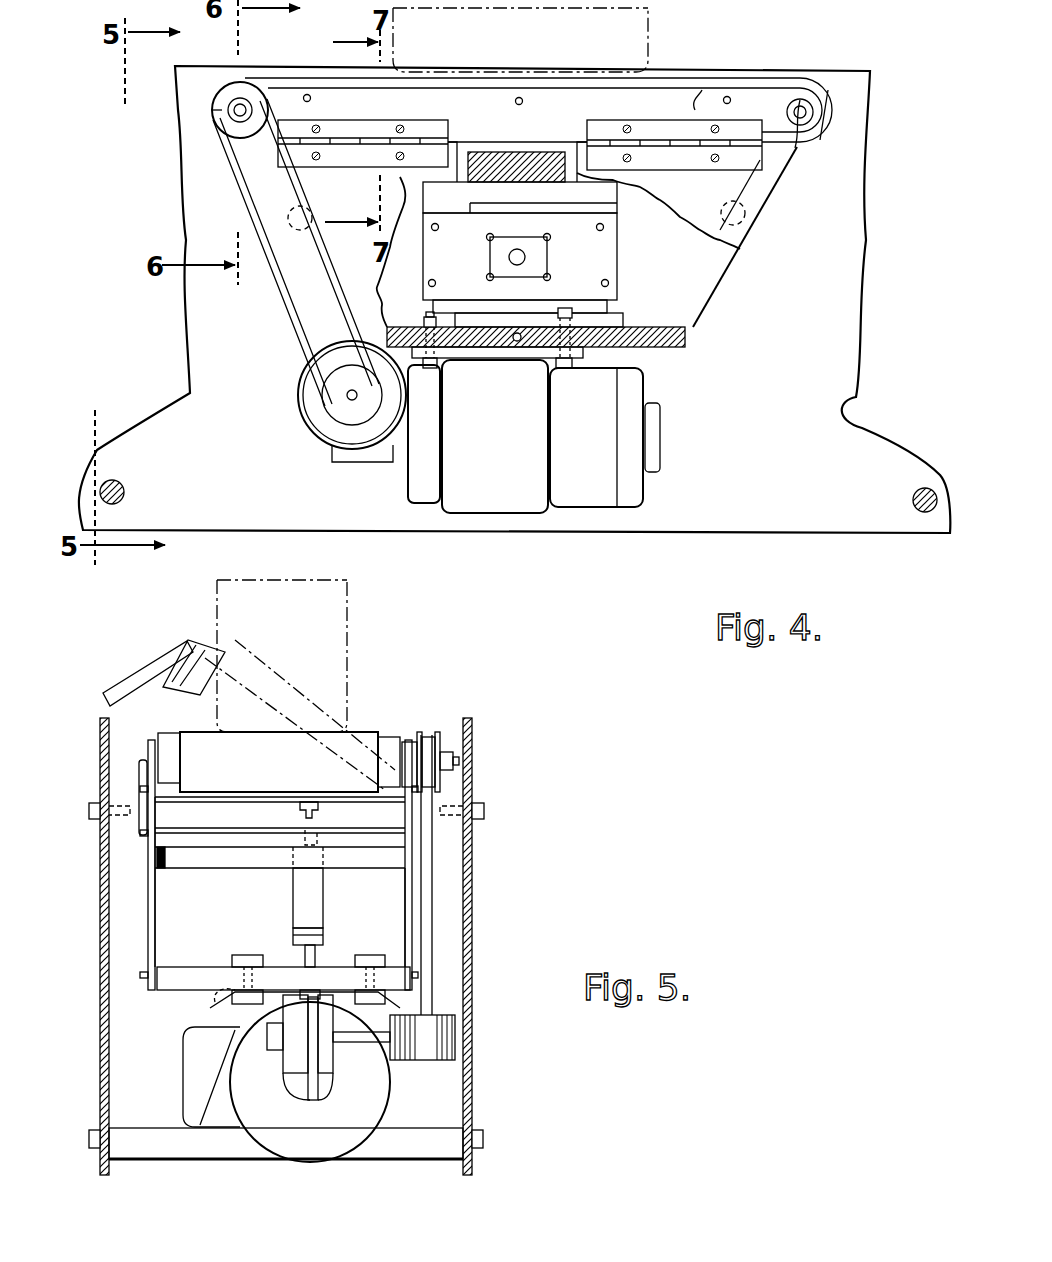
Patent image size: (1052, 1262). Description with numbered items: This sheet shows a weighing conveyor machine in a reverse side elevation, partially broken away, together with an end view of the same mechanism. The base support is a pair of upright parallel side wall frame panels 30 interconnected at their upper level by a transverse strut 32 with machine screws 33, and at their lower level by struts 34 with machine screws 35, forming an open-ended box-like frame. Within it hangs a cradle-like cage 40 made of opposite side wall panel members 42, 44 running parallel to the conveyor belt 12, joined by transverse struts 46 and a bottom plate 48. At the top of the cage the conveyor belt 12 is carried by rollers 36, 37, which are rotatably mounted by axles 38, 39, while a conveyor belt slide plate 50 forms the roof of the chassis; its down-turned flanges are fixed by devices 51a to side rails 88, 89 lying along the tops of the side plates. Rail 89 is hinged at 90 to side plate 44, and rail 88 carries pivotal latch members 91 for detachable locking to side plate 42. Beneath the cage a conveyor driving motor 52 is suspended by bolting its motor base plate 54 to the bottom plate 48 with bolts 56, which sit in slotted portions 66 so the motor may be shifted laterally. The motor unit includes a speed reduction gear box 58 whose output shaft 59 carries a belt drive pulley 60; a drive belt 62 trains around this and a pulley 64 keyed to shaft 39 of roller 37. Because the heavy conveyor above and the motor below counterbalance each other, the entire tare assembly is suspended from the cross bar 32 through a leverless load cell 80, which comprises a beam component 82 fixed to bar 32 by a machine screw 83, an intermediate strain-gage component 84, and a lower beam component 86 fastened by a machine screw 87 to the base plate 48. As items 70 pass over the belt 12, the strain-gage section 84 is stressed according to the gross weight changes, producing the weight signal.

In FIG. 4, the conveyor belt 12 is at (778, 70).
In FIG. 5, the conveyor belt 12 is at (352, 705).
In FIG. 4, the side wall frame panel 30 is at (848, 378).
In FIG. 5, the side wall frame panel 30 is at (472, 862).
In FIG. 4, the transverse strut 32 is at (506, 168).
In FIG. 5, the transverse strut 32 is at (142, 830).
In FIG. 5, the machine screw 33 is at (92, 808).
In FIG. 4, the strut 34 is at (122, 484).
In FIG. 5, the strut 34 is at (136, 1147).
In FIG. 5, the machine screw 35 is at (95, 1134).
In FIG. 4, the roller 36 is at (818, 76).
In FIG. 5, the roller 37 is at (170, 732).
In FIG. 4, the axle 38 is at (806, 113).
In FIG. 4, the axle 39 is at (236, 110).
In FIG. 5, the axle 39 is at (453, 768).
In FIG. 4, the cage 40 is at (722, 300).
In FIG. 5, the cage 40 is at (150, 995).
In FIG. 4, the side wall panel member 42 is at (725, 272).
In FIG. 5, the side wall panel member 42 is at (158, 910).
In FIG. 4, the side wall panel member 44 is at (760, 182).
In FIG. 5, the side wall panel member 44 is at (405, 906).
In FIG. 4, the transverse strut 46 is at (288, 220).
In FIG. 5, the transverse strut 46 is at (226, 856).
In FIG. 4, the bottom plate 48 is at (660, 345).
In FIG. 5, the bottom plate 48 is at (173, 990).
In FIG. 4, the conveyor belt slide plate 50 is at (328, 82).
In FIG. 4, the fixing device 51a is at (306, 94).
In FIG. 4, the conveyor driving motor 52 is at (510, 443).
In FIG. 5, the conveyor driving motor 52 is at (378, 1106).
In FIG. 4, the motor base plate 54 is at (592, 358).
In FIG. 5, the motor base plate 54 is at (385, 999).
In FIG. 4, the bolt 56 is at (424, 318).
In FIG. 5, the bolt 56 is at (232, 956).
In FIG. 4, the speed reduction gear box 58 is at (384, 460).
In FIG. 5, the speed reduction gear box 58 is at (318, 1150).
In FIG. 4, the output shaft 59 is at (350, 398).
In FIG. 4, the belt drive pulley 60 is at (345, 406).
In FIG. 5, the belt drive pulley 60 is at (435, 1062).
In FIG. 4, the drive belt 62 is at (285, 296).
In FIG. 5, the drive belt 62 is at (432, 904).
In FIG. 4, the pulley 64 is at (216, 120).
In FIG. 5, the pulley 64 is at (446, 750).
In FIG. 4, the slotted portion 66 is at (445, 360).
In FIG. 5, the slotted portion 66 is at (218, 992).
In FIG. 4, the item to be weighed 70 is at (652, 17).
In FIG. 5, the item to be weighed 70 is at (350, 608).
In FIG. 4, the load cell 80 is at (622, 253).
In FIG. 5, the load cell 80 is at (290, 906).
In FIG. 4, the beam component 82 is at (572, 178).
In FIG. 5, the beam component 82 is at (300, 832).
In FIG. 5, the machine screw 83 is at (286, 806).
In FIG. 4, the strain-gage component 84 is at (592, 263).
In FIG. 5, the strain-gage component 84 is at (323, 886).
In FIG. 4, the lower beam component 86 is at (460, 294).
In FIG. 5, the lower beam component 86 is at (323, 938).
In FIG. 5, the machine screw 87 is at (316, 958).
In FIG. 4, the side rail 88 is at (694, 108).
In FIG. 5, the side rail 88 is at (388, 765).
In FIG. 5, the side rail 89 is at (148, 736).
In FIG. 4, the hinge 90 is at (340, 162).
In FIG. 5, the hinge 90 is at (440, 798).
In FIG. 5, the latch member 91 is at (140, 668).